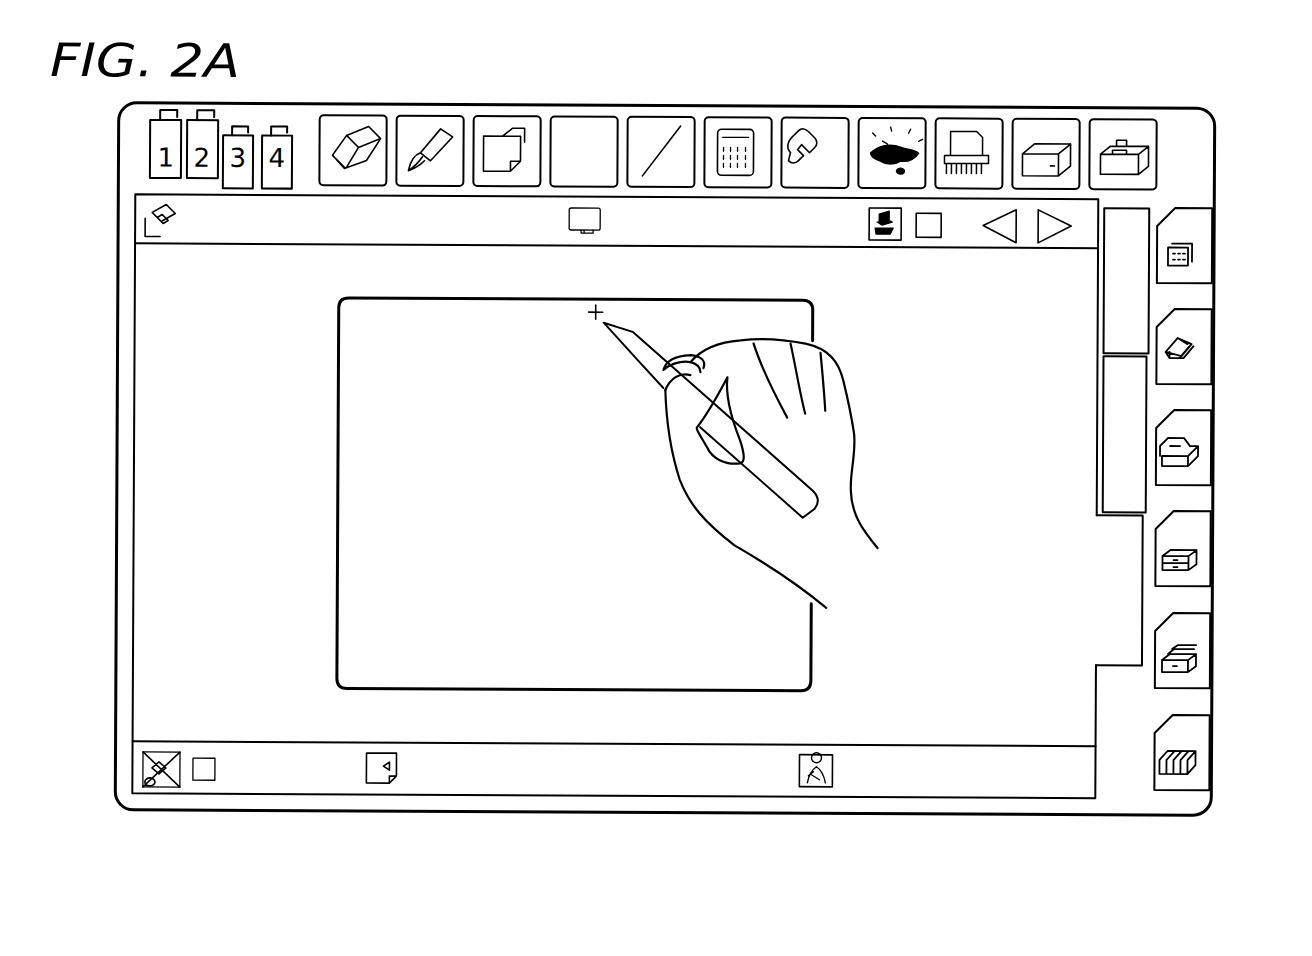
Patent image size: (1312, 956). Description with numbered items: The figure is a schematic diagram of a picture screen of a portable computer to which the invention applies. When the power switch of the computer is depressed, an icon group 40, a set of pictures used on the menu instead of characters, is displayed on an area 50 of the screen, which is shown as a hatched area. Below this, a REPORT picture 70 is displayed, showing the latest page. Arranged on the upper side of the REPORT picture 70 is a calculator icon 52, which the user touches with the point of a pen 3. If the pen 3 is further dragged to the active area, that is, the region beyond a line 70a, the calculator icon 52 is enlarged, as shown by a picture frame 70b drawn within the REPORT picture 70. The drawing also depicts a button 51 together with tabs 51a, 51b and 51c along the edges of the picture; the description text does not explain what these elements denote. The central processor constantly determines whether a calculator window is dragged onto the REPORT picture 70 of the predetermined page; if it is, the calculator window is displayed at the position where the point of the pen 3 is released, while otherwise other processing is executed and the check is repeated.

The pen 3 is at (637, 365).
The icon group 40 is at (1160, 93).
The area 50 is at (1014, 796).
The button icon 51 is at (1189, 211).
The Action tab 51a is at (1112, 330).
The Connection tab 51b is at (1112, 473).
The Report tab 51c is at (1104, 631).
The calculator icon 52 is at (745, 189).
The REPORT picture 70 is at (735, 777).
The line 70a is at (237, 247).
The picture frame 70b is at (364, 520).